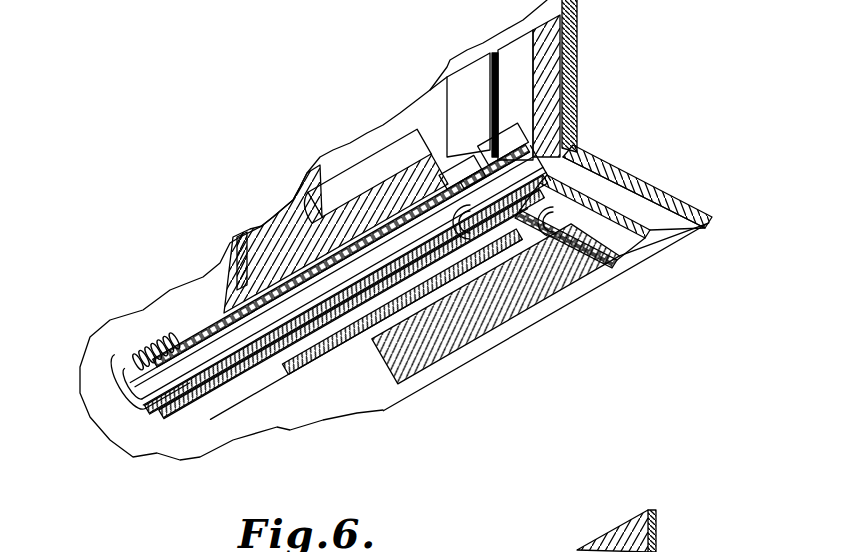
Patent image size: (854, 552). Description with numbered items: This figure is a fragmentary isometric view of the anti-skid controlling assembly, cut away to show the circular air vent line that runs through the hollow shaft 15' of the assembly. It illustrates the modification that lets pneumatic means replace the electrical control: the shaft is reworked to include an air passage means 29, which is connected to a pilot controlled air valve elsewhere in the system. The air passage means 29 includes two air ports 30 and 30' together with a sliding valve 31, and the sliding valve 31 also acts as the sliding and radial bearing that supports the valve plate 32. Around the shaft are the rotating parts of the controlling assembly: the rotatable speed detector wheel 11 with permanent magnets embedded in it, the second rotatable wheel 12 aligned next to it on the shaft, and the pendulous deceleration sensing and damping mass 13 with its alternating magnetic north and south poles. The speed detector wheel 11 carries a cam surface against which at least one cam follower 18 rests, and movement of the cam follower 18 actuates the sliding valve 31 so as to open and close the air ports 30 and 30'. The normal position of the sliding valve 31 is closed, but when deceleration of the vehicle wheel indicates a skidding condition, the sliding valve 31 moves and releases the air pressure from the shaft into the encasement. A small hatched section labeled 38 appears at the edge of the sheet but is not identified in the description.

The rotatable speed detector wheel 11 is at (297, 200).
The second rotatable wheel 12 is at (430, 88).
The deceleration sensing and damping mass 13 is at (538, 80).
The hollow shaft 15' is at (294, 275).
The cam follower 18 is at (557, 263).
The air passage means 29 is at (137, 410).
The air port 30 is at (527, 147).
The air port 30' is at (622, 173).
The sliding valve 31 is at (575, 176).
The valve plate 32 is at (560, 220).
The wall section 38 is at (656, 549).